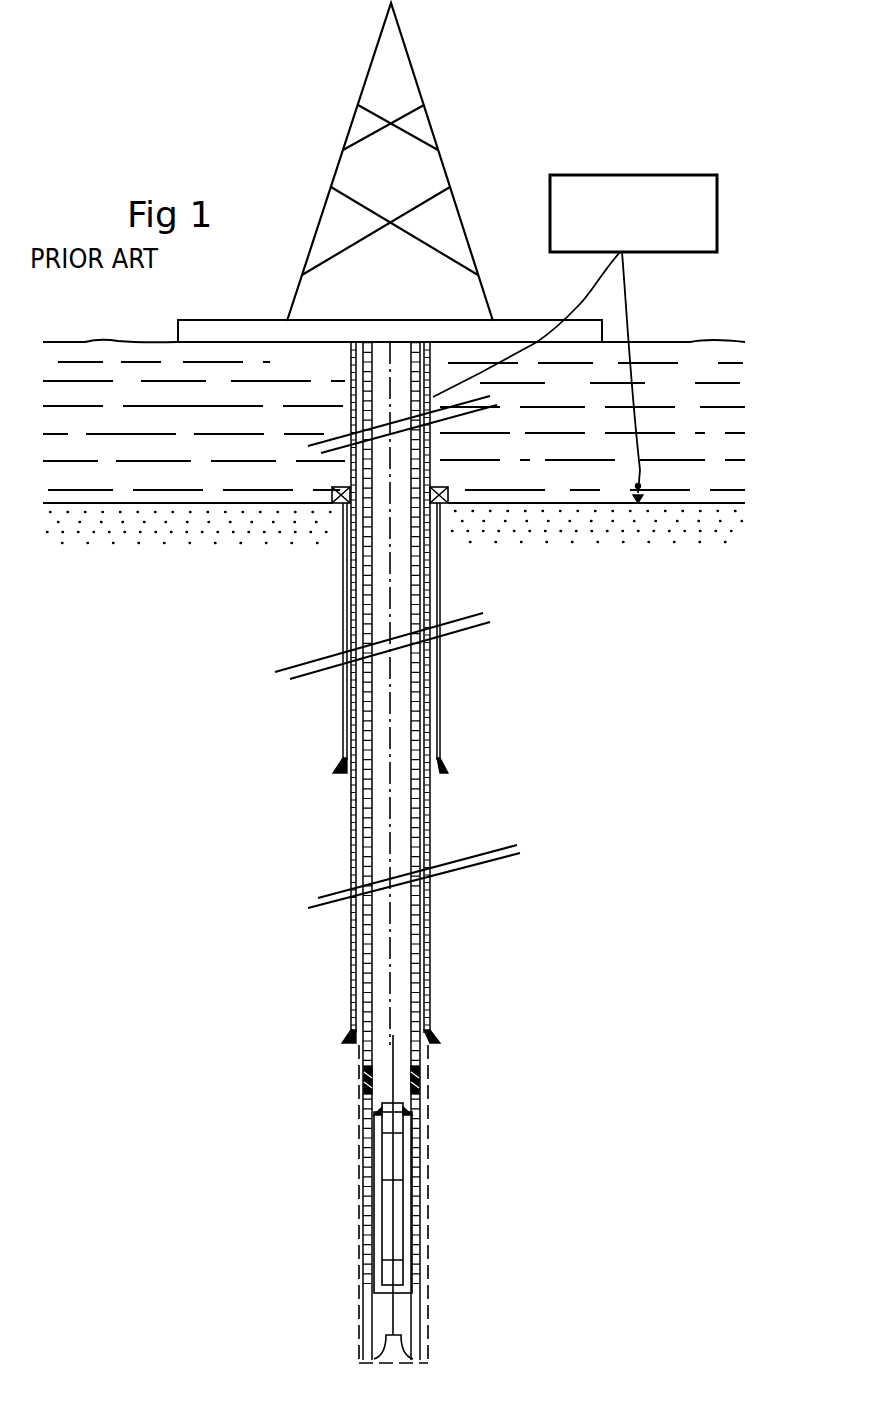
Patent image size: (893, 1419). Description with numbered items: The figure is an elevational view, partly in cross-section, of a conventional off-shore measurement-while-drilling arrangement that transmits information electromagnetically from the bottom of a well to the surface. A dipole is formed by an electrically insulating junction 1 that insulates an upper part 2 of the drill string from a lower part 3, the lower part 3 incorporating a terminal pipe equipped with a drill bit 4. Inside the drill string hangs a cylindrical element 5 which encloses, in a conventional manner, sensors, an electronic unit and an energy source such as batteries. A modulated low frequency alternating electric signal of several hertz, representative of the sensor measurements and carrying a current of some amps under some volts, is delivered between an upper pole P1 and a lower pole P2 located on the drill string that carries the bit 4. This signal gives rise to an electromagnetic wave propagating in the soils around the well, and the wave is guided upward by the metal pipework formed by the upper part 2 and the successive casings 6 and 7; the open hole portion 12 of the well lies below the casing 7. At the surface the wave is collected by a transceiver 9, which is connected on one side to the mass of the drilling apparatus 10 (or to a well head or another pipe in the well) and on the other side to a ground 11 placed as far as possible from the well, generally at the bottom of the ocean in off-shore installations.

The electrically insulating junction 1 is at (420, 1083).
The upper part of drill string 2 is at (416, 756).
The lower part of drill string 3 is at (420, 1160).
The drill bit 4 is at (410, 1334).
The cylindrical element 5 is at (393, 1210).
The casing 6 is at (438, 585).
The casing 7 is at (430, 918).
The transceiver 9 is at (717, 226).
The drilling apparatus 10 is at (578, 306).
The ground 11 is at (645, 495).
The open hole portion 12 is at (428, 1230).
The upper pole P1 is at (380, 1050).
The lower pole P2 is at (414, 1110).